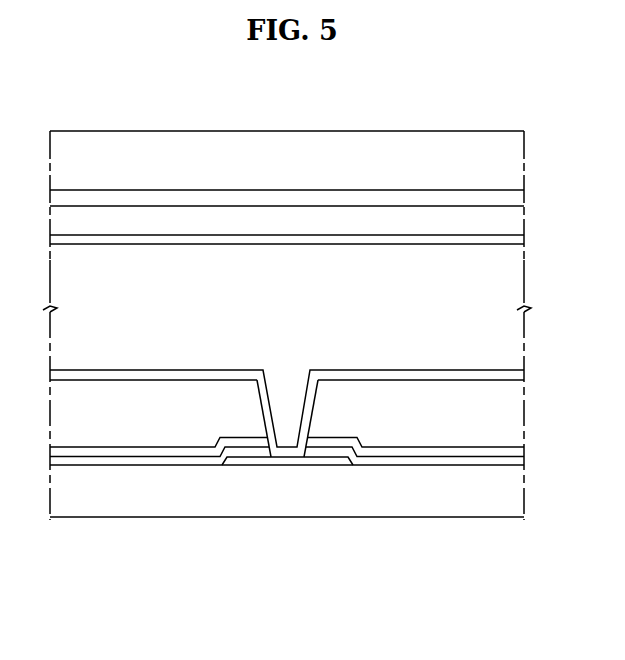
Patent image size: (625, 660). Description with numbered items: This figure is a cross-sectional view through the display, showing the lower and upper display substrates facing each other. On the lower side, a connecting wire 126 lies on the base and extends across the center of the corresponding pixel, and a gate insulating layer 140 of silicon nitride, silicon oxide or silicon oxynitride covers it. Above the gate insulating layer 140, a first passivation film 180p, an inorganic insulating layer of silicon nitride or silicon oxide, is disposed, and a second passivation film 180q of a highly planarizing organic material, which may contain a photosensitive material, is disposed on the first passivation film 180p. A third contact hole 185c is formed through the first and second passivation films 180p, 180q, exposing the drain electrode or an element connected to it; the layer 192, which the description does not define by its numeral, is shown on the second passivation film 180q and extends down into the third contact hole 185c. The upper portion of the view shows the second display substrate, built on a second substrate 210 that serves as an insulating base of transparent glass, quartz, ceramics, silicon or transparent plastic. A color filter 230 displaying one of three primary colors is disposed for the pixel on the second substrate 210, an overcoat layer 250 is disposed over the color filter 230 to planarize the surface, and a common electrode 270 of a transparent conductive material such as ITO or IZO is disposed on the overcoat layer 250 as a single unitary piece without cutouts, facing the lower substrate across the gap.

The second substrate 210 is at (186, 150).
The color filter 230 is at (245, 198).
The overcoat layer 250 is at (315, 215).
The common electrode 270 is at (386, 242).
The connecting wire 126 is at (315, 463).
The gate insulating layer 140 is at (173, 463).
The first passivation film 180p is at (115, 453).
The second passivation film 180q is at (383, 390).
The third contact hole 185c is at (286, 386).
The pixel electrode 192 is at (453, 377).